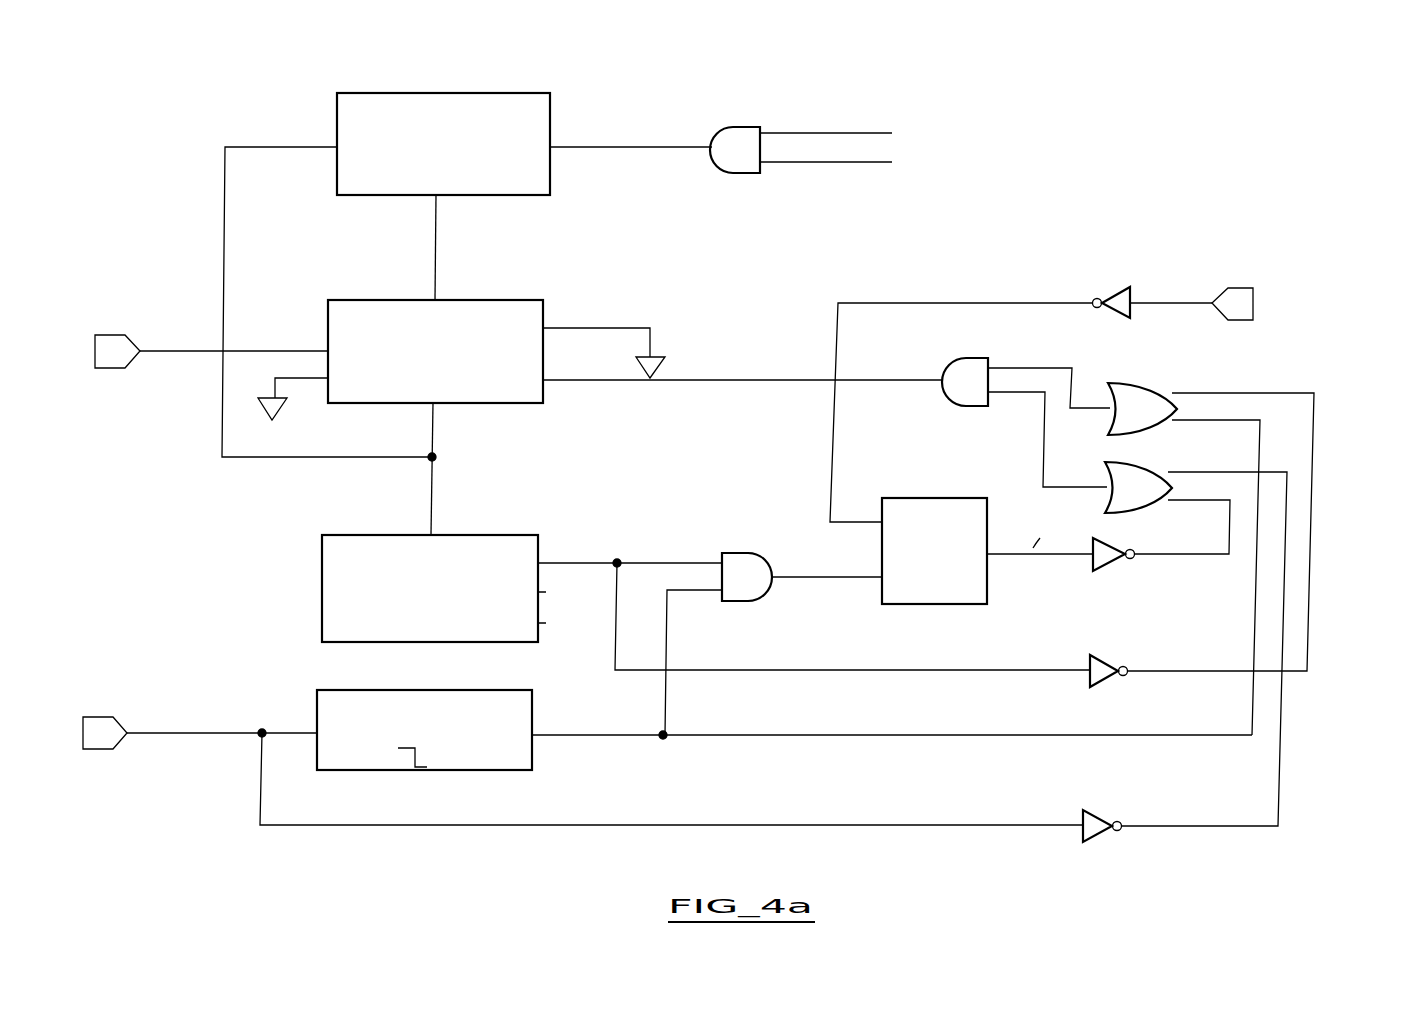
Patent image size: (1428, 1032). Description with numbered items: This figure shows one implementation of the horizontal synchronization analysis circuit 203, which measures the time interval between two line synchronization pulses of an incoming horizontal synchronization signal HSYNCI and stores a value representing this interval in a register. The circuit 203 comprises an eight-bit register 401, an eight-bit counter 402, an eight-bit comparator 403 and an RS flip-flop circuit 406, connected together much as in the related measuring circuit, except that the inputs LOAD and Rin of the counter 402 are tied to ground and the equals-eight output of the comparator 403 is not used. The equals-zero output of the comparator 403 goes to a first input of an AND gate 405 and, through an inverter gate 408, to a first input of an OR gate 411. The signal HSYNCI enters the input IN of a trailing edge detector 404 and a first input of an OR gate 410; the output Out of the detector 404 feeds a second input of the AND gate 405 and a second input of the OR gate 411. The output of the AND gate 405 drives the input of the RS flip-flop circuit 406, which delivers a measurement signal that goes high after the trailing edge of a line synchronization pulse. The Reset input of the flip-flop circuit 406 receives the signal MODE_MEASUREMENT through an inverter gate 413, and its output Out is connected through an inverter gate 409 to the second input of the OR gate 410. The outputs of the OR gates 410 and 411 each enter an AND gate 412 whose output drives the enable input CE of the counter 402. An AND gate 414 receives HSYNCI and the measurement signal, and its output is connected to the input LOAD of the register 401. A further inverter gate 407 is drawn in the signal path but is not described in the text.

The horizontal synchronization analysis circuit 203 is at (202, 569).
The eight-bit register 401 is at (511, 197).
The eight-bit counter 402 is at (503, 405).
The eight-bit comparator 403 is at (318, 617).
The trailing edge detector 404 is at (532, 757).
The AND gate 405 is at (747, 551).
The RS flip-flop circuit 406 is at (932, 605).
The inverter 407 is at (1103, 838).
The inverter gate 408 is at (1110, 682).
The inverter gate 409 is at (1108, 572).
The OR gate 410 is at (1128, 462).
The OR gate 411 is at (1152, 383).
The AND gate 412 is at (956, 407).
The inverter gate 413 is at (1113, 287).
The AND gate 414 is at (733, 174).